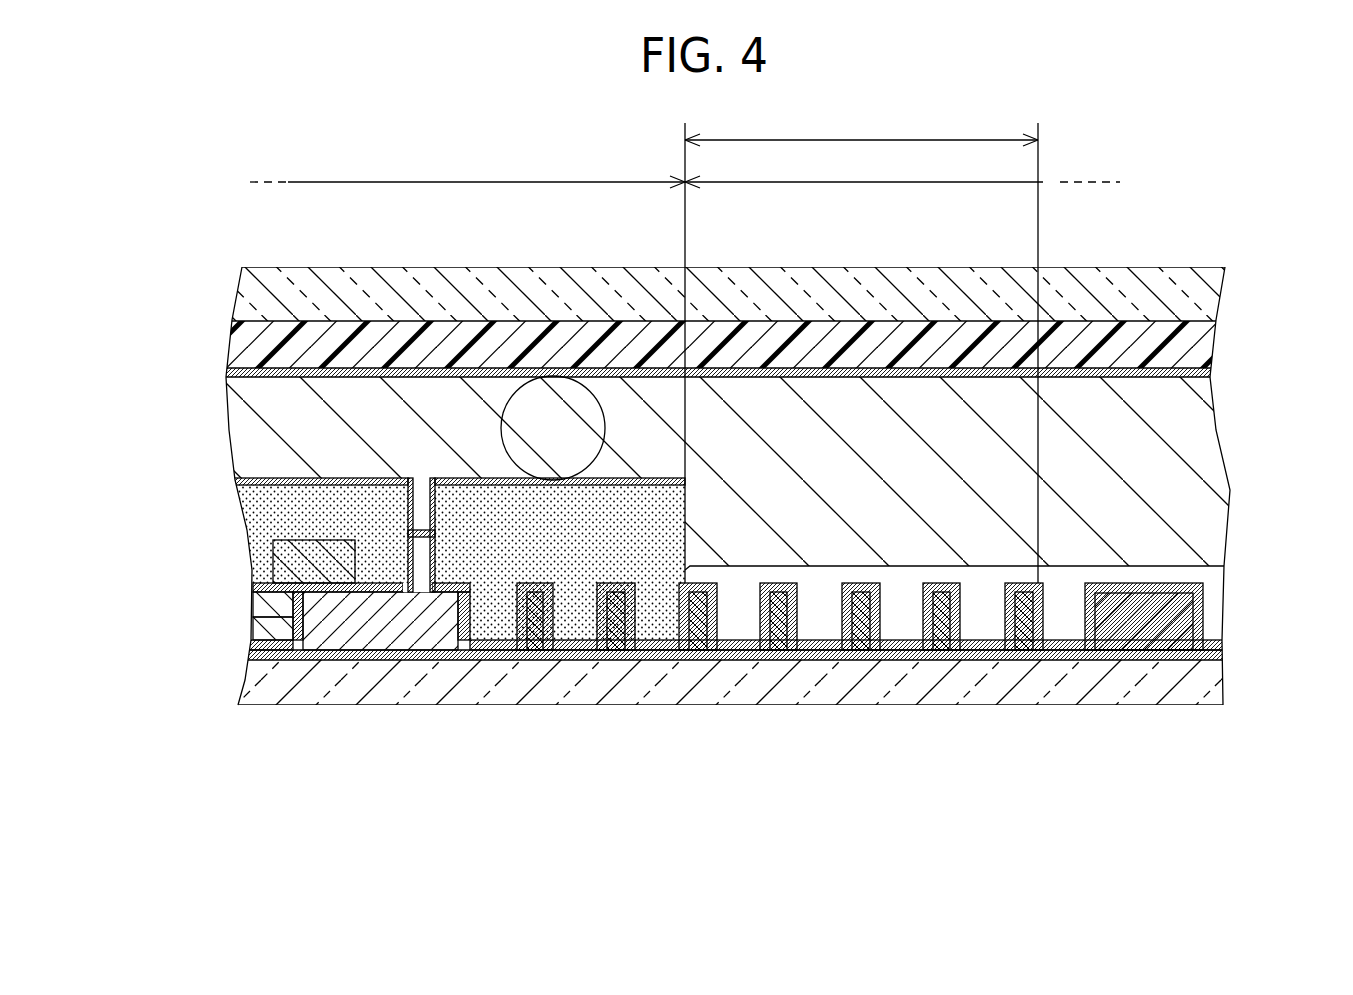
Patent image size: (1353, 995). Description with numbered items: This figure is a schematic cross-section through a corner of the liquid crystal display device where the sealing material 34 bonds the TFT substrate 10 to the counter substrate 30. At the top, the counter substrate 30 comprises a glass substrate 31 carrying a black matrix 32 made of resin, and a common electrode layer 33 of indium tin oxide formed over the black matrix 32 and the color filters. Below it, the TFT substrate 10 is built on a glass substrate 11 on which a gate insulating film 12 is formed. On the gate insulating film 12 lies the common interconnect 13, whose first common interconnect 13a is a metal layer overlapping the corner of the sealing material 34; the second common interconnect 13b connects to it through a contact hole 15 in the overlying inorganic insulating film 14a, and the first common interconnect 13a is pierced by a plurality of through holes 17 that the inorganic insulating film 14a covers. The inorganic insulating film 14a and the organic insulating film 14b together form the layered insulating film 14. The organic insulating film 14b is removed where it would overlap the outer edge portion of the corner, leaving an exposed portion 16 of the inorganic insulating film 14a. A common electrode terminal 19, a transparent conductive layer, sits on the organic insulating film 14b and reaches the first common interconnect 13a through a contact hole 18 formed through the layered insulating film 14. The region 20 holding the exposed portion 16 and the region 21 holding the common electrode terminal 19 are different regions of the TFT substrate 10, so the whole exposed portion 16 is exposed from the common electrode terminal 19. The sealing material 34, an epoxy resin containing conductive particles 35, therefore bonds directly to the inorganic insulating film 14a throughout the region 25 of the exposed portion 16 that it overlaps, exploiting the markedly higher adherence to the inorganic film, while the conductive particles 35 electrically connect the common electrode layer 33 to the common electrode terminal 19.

The TFT substrate 10 is at (78, 460).
The glass substrate 11 is at (253, 687).
The gate insulating film 12 is at (252, 652).
The common interconnect 13 is at (138, 573).
The first common interconnect 13a is at (263, 617).
The second common interconnect 13b is at (263, 607).
The layered insulating film 14 is at (138, 493).
The inorganic insulating film 14a is at (258, 580).
The organic insulating film 14b is at (253, 528).
The contact hole 15 is at (328, 585).
The exposed portion 16 is at (942, 604).
The through hole 17 is at (845, 618).
The contact hole 18 is at (412, 550).
The common electrode terminal 19 is at (236, 482).
The region 20 is at (937, 730).
The region 21 is at (467, 353).
The region 25 is at (861, 122).
The counter substrate 30 is at (1298, 263).
The glass substrate 31 is at (1210, 291).
The black matrix 32 is at (1206, 341).
The common electrode layer 33 is at (1210, 377).
The sealing material 34 is at (1017, 432).
The conductive particle 35 is at (537, 393).